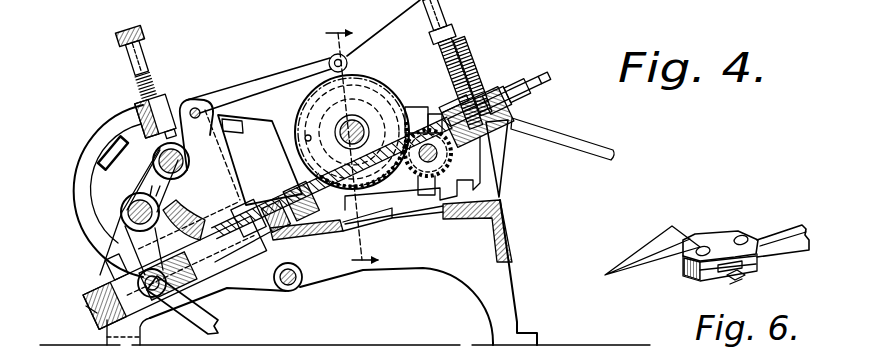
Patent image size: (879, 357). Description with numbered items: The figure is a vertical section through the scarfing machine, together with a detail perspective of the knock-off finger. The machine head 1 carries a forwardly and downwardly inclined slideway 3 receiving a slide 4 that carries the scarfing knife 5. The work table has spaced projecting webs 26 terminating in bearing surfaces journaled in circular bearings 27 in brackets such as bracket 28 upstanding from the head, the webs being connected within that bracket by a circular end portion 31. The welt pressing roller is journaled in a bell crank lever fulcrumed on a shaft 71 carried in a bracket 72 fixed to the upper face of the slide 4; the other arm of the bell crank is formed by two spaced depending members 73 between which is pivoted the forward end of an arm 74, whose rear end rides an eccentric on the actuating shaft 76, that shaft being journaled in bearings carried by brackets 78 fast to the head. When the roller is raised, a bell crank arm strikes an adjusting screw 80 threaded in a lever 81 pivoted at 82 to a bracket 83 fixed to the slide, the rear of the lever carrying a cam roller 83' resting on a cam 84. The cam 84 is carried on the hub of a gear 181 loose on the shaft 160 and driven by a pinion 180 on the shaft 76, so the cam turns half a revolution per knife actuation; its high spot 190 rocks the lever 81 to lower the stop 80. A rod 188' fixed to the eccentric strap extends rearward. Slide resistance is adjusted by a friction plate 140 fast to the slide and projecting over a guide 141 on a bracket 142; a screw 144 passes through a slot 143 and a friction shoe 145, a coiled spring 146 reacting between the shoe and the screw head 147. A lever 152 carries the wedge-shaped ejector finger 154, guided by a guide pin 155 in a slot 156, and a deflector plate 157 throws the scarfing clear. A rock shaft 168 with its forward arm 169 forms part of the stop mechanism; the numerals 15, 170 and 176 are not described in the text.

In FIG. 4, the machine head 1 is at (483, 280).
In FIG. 4, the slideway 3 is at (103, 330).
In FIG. 4, the slide 4 is at (100, 308).
In FIG. 4, the scarfing knife 5 is at (359, 142).
In FIG. 4, the arm 15 is at (283, 5).
In FIG. 4, the projecting webs 26 is at (110, 140).
In FIG. 4, the circular bearings 27 is at (137, 205).
In FIG. 4, the bracket 28 is at (82, 163).
In FIG. 4, the circular end portion 31 is at (158, 161).
In FIG. 4, the shaft 71 is at (125, 212).
In FIG. 4, the bracket 72 is at (110, 270).
In FIG. 4, the depending members 73 is at (169, 204).
In FIG. 4, the arm 74 is at (210, 317).
In FIG. 4, the actuating shaft 76 is at (450, 158).
In FIG. 4, the brackets 78 is at (306, 210).
In FIG. 4, the adjusting screw 80 is at (147, 72).
In FIG. 4, the lever 81 is at (204, 100).
In FIG. 4, the pivot 82 is at (194, 108).
In FIG. 4, the bracket 83 is at (255, 163).
In FIG. 4, the cam roller 83' is at (360, 49).
In FIG. 4, the cam 84 is at (386, 82).
In FIG. 4, the friction plate 140 is at (548, 77).
In FIG. 4, the guide 141 is at (512, 115).
In FIG. 4, the bracket 142 is at (490, 187).
In FIG. 4, the slot 143 is at (507, 87).
In FIG. 4, the screw 144 is at (474, 72).
In FIG. 4, the friction shoe 145 is at (497, 90).
In FIG. 4, the coiled spring 146 is at (452, 47).
In FIG. 4, the head 147 is at (425, 13).
In FIG. 6, the lever 152 is at (768, 242).
In FIG. 6, the ejector finger 154 is at (675, 240).
In FIG. 6, the guide pin 155 is at (733, 270).
In FIG. 6, the slot 156 is at (740, 267).
In FIG. 4, the deflector plate 157 is at (177, 7).
In FIG. 4, the shaft 160 is at (340, 128).
In FIG. 4, the rock shaft 168 is at (294, 272).
In FIG. 4, the forward arm 169 is at (266, 5).
In FIG. 4, the arm 170 is at (232, 6).
In FIG. 4, the arm 176 is at (541, 5).
In FIG. 4, the pinion 180 is at (433, 178).
In FIG. 4, the gear 181 is at (396, 118).
In FIG. 4, the rod 188' is at (568, 139).
In FIG. 4, the high spot 190 is at (352, 76).